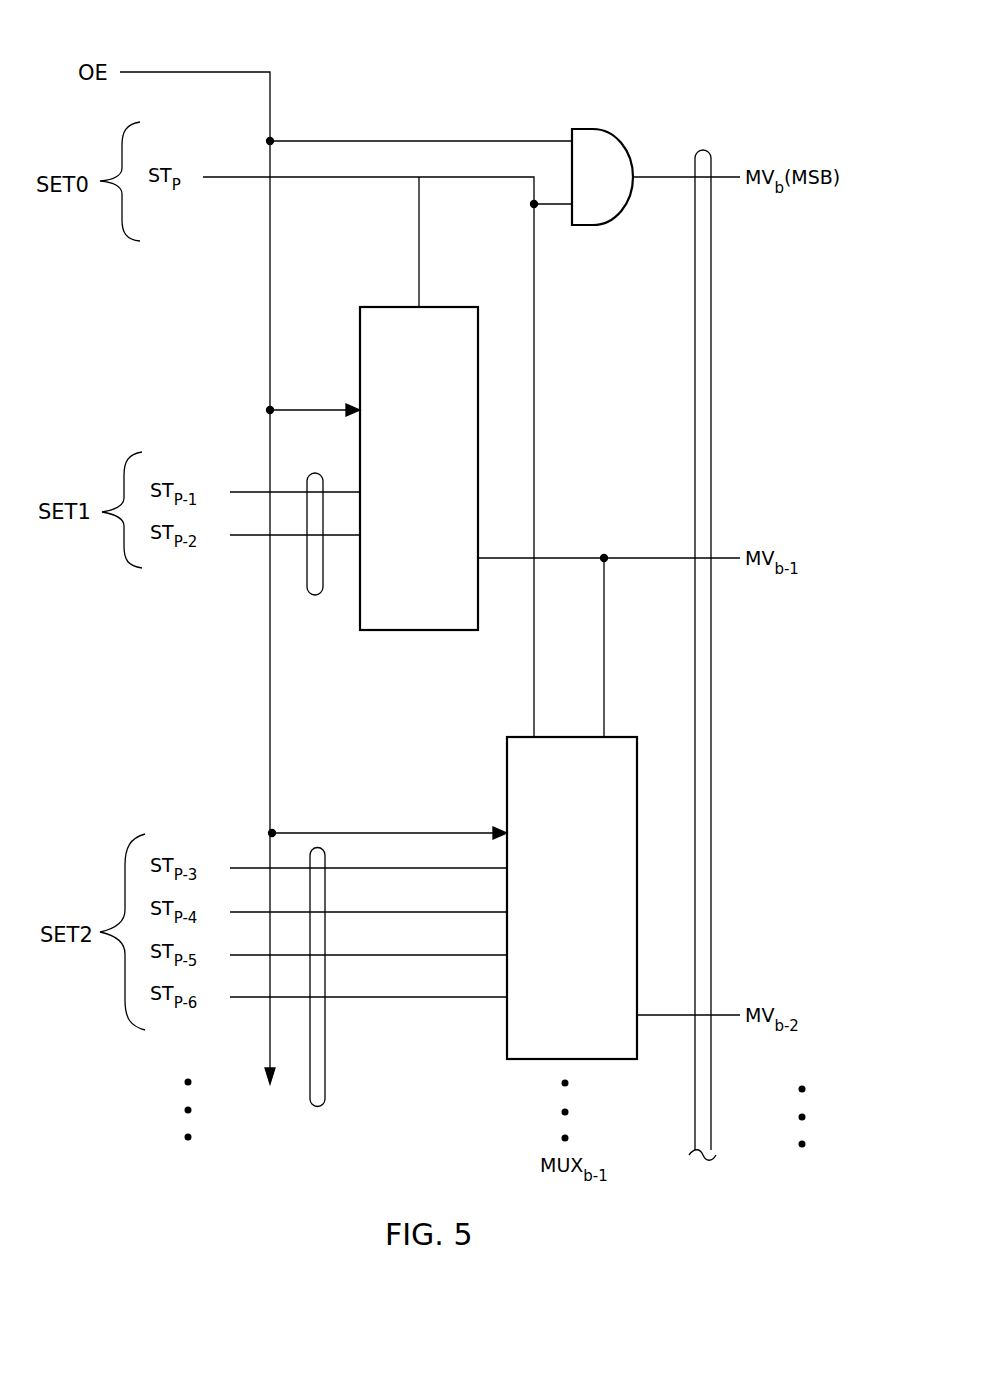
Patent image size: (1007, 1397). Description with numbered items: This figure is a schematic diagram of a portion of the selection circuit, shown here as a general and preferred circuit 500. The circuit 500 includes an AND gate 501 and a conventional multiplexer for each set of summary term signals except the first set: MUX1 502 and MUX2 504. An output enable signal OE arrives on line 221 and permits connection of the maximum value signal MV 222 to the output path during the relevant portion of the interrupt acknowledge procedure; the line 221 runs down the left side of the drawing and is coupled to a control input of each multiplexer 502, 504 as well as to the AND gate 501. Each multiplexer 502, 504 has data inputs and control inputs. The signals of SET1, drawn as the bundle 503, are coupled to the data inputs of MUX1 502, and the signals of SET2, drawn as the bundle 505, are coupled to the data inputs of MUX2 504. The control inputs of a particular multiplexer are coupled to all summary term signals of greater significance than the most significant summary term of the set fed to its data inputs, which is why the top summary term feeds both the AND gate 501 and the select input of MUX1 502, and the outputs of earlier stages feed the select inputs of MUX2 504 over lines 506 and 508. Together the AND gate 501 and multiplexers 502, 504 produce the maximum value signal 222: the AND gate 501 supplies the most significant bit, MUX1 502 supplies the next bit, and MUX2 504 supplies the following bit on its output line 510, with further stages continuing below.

The selection circuit 500 is at (470, 53).
The output enable line 221 is at (214, 68).
The maximum value signal MV 222 is at (700, 150).
The AND gate 501 is at (626, 189).
The multiplexer MUX1 502 is at (442, 305).
The SET1 signals 503 is at (315, 597).
The multiplexer MUX2 504 is at (505, 1028).
The SET2 signals 505 is at (316, 1107).
The select line 506 is at (417, 262).
The select line S0 of MUX2 508 is at (604, 600).
The output line MVb-2 510 is at (658, 1017).